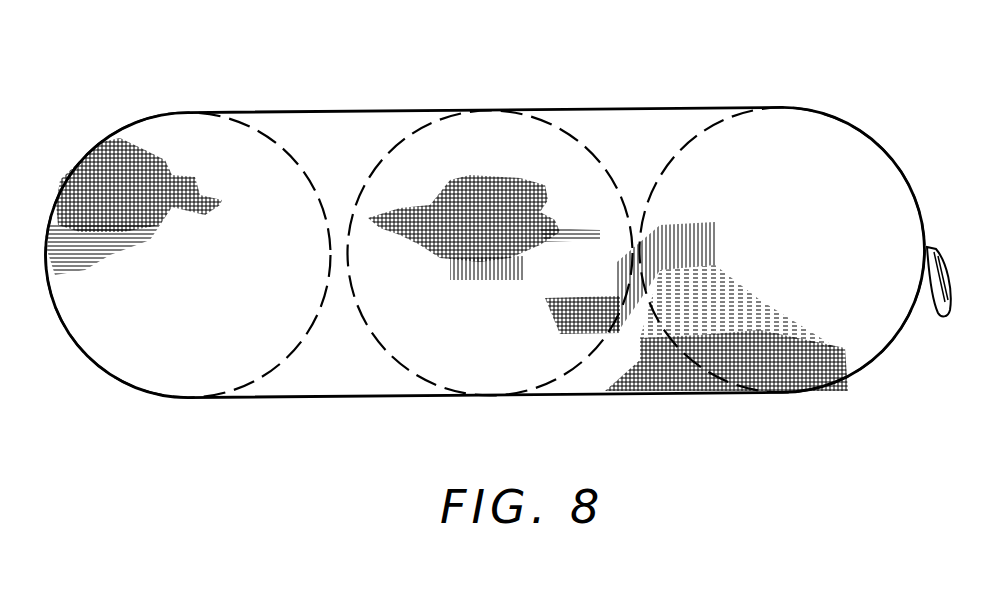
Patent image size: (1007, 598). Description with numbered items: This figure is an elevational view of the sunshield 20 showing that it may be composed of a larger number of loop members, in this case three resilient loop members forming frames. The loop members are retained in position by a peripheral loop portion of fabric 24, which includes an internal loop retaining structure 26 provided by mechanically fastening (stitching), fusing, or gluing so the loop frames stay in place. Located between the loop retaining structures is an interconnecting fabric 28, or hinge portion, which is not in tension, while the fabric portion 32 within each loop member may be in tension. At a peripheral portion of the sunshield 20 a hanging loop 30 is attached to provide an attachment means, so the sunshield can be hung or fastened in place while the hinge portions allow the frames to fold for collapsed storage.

The sunshield 20 is at (488, 160).
The peripheral loop portion of fabric 24 is at (862, 370).
The internal loop retaining structure 26 is at (285, 153).
The interconnecting fabric 28 is at (337, 367).
The hanging loop 30 is at (938, 320).
The fabric portion 32 is at (745, 367).